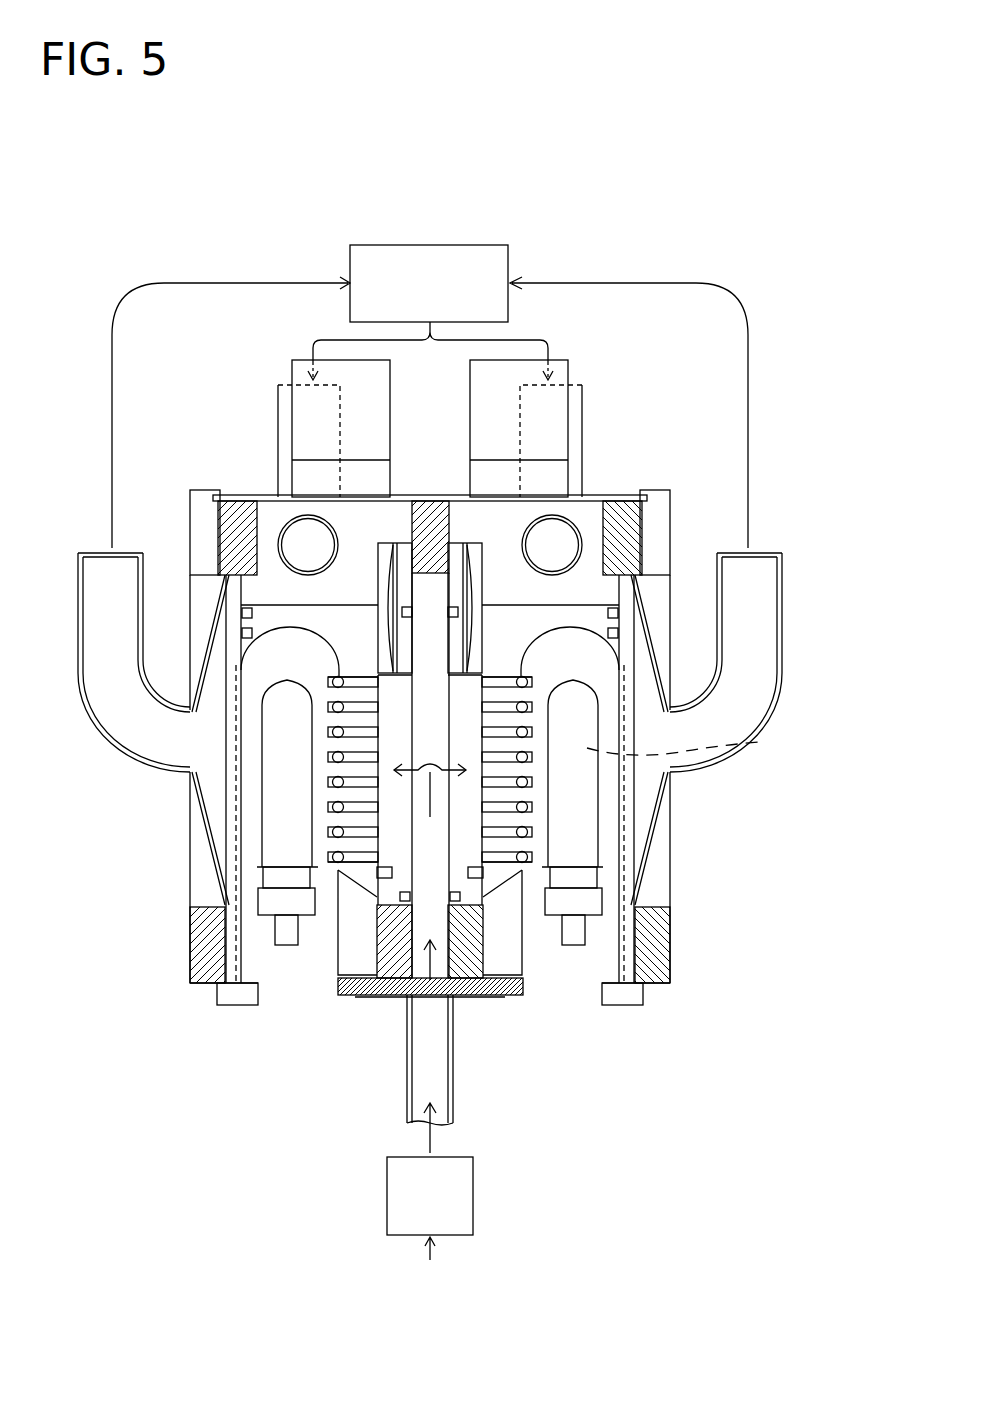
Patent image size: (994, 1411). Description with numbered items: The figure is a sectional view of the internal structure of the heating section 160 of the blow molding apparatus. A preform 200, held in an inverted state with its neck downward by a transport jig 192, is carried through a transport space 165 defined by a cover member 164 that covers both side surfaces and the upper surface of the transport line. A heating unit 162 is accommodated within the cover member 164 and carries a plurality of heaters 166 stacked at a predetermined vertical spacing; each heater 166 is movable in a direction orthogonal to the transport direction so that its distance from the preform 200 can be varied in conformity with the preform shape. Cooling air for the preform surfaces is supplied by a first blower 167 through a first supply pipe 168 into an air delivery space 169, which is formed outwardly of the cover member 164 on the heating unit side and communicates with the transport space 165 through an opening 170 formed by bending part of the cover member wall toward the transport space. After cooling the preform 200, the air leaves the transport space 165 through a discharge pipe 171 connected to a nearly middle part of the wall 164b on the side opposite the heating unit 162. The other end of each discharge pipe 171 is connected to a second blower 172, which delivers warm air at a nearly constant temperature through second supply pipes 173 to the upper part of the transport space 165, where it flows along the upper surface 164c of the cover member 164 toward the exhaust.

The heating section 160 is at (728, 174).
The heating unit 162 is at (335, 872).
The cover member 164 is at (456, 656).
The wall 164b is at (203, 865).
The upper surface 164c is at (290, 496).
The transport space 165 is at (250, 830).
The heater 166 is at (442, 866).
The first blower 167 is at (453, 1200).
The first supply pipe 168 is at (432, 1087).
The air delivery space 169 is at (423, 912).
The opening 170 is at (397, 693).
The discharge pipe 171 is at (125, 718).
The second blower 172 is at (437, 262).
The second supply pipe 173 is at (295, 543).
The transport jig 192 is at (677, 954).
The preform 200 is at (760, 742).